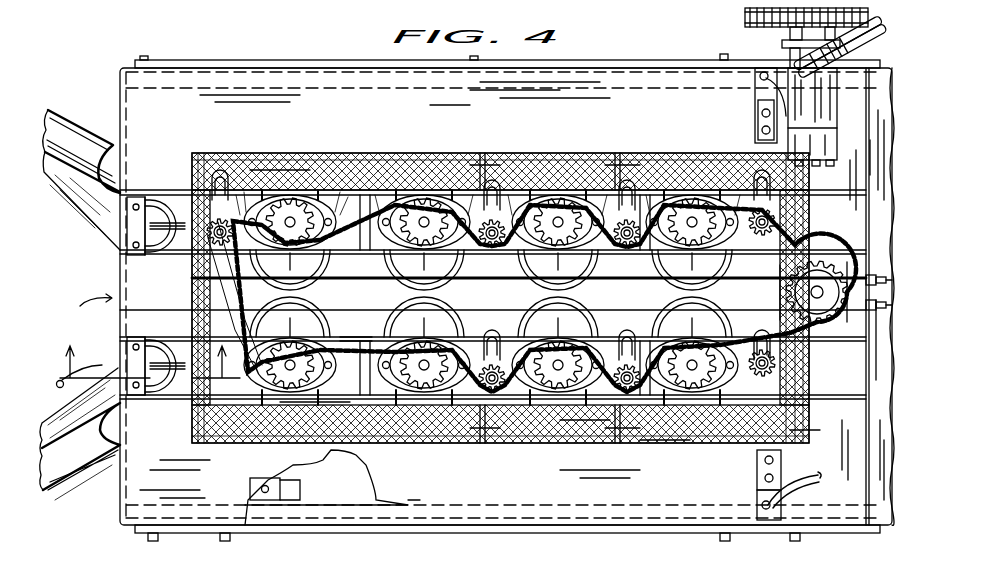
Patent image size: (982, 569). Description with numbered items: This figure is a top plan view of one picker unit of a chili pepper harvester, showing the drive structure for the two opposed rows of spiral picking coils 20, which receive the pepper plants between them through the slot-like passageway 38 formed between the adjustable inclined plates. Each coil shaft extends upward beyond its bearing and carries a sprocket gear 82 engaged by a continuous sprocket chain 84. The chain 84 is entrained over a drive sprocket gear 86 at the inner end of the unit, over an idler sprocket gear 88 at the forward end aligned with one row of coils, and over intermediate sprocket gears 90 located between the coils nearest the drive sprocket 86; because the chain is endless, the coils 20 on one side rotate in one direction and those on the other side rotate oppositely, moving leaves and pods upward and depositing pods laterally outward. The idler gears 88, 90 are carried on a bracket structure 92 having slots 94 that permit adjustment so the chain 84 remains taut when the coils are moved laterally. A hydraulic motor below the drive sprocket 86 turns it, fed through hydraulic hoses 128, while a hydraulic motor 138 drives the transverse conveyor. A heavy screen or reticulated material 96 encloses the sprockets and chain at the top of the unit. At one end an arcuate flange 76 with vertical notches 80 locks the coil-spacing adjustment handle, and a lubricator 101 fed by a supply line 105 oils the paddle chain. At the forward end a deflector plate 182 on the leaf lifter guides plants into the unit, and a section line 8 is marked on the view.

The section line 8 is at (148, 371).
The spiral picking coils 20 is at (428, 330).
The slot-like passageway 38 is at (602, 306).
The arcuate flange 76 is at (139, 188).
The vertical notches 80 is at (171, 190).
The sprocket gear 82 is at (405, 442).
The continuous sprocket chain 84 is at (352, 336).
The drive sprocket gear 86 is at (818, 316).
The idler sprocket gear 88 is at (243, 278).
The intermediate sprocket gears 90 is at (447, 155).
The bracket structure 92 is at (640, 154).
The slots 94 is at (611, 154).
The reticulated material 96 is at (540, 155).
The lubricator 101 is at (760, 70).
The supply line 105 is at (808, 485).
The hydraulic hoses 128 is at (872, 277).
The hydraulic motor 138 is at (91, 313).
The deflector plate 182 is at (82, 210).